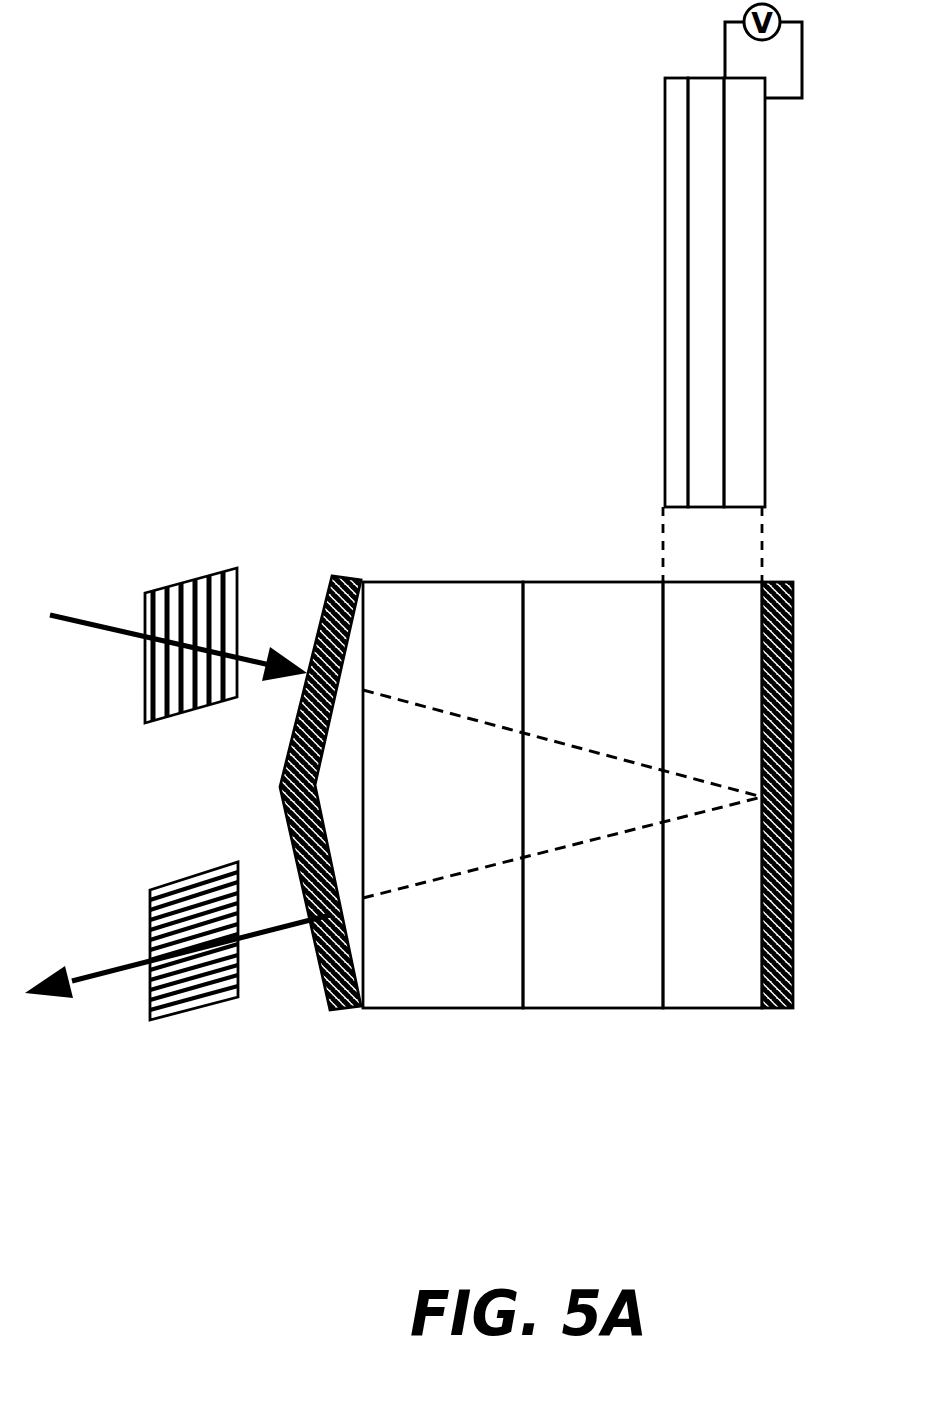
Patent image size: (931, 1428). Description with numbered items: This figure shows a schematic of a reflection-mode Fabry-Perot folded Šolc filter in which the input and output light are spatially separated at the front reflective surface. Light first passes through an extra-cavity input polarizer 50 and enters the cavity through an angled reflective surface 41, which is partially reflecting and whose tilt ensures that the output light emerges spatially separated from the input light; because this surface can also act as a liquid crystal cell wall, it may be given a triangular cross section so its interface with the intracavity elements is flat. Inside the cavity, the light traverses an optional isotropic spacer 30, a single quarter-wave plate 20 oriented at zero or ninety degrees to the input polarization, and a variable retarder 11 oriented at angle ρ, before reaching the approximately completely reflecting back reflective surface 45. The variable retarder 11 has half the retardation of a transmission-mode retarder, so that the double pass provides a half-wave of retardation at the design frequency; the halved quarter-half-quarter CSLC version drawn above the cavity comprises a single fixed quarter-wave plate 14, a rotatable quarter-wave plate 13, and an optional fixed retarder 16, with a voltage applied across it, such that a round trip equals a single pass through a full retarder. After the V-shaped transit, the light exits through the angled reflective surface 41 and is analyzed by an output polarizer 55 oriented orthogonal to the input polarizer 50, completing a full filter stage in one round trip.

The variable retarder 11 is at (714, 1010).
The rotatable quarter-wave plate 13 is at (765, 200).
The fixed quarter-wave plate 14 is at (710, 78).
The fixed retarder 16 is at (665, 163).
The quarter-wave plate 20 is at (605, 1010).
The isotropic spacer 30 is at (470, 1010).
The angled reflective surface 41 is at (348, 1012).
The back reflective surface 45 is at (775, 1010).
The polarizing element 50 is at (196, 578).
The polarizing element 55 is at (196, 1008).